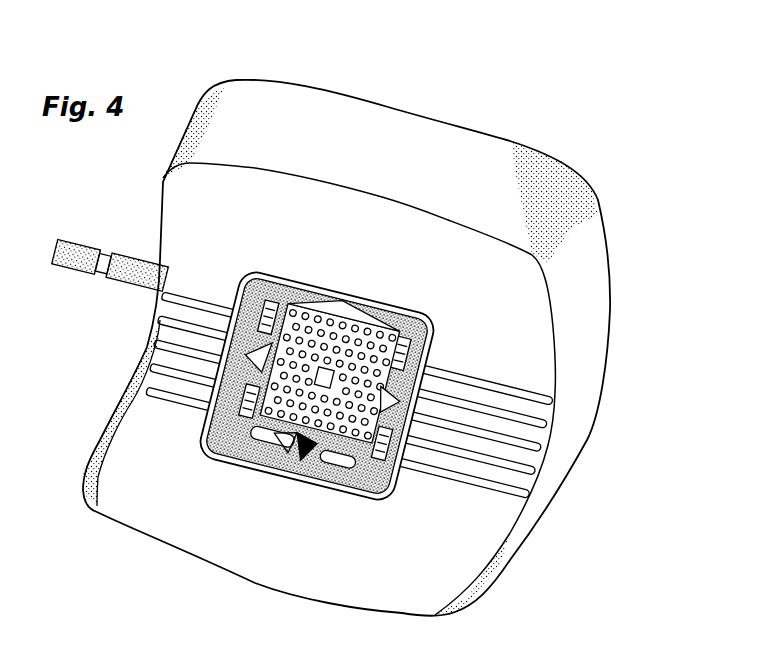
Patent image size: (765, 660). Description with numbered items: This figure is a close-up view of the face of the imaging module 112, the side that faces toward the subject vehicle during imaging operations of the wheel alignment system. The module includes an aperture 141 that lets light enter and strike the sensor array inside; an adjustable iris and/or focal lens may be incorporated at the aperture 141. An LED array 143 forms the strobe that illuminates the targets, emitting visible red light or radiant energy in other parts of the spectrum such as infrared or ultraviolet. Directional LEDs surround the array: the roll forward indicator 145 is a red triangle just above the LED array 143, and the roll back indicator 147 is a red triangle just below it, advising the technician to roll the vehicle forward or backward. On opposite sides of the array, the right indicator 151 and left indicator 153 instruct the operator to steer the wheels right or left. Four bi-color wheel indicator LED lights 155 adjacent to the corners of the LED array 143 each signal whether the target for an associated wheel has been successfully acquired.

The imaging module 112 is at (197, 98).
The aperture 141 is at (298, 440).
The LED array 143 is at (287, 295).
The roll forward indicator 145 is at (318, 292).
The roll back indicator 147 is at (327, 385).
The right indicator 151 is at (400, 392).
The left indicator 153 is at (250, 370).
The bi-color wheel indicator LED lights 155 is at (407, 438).